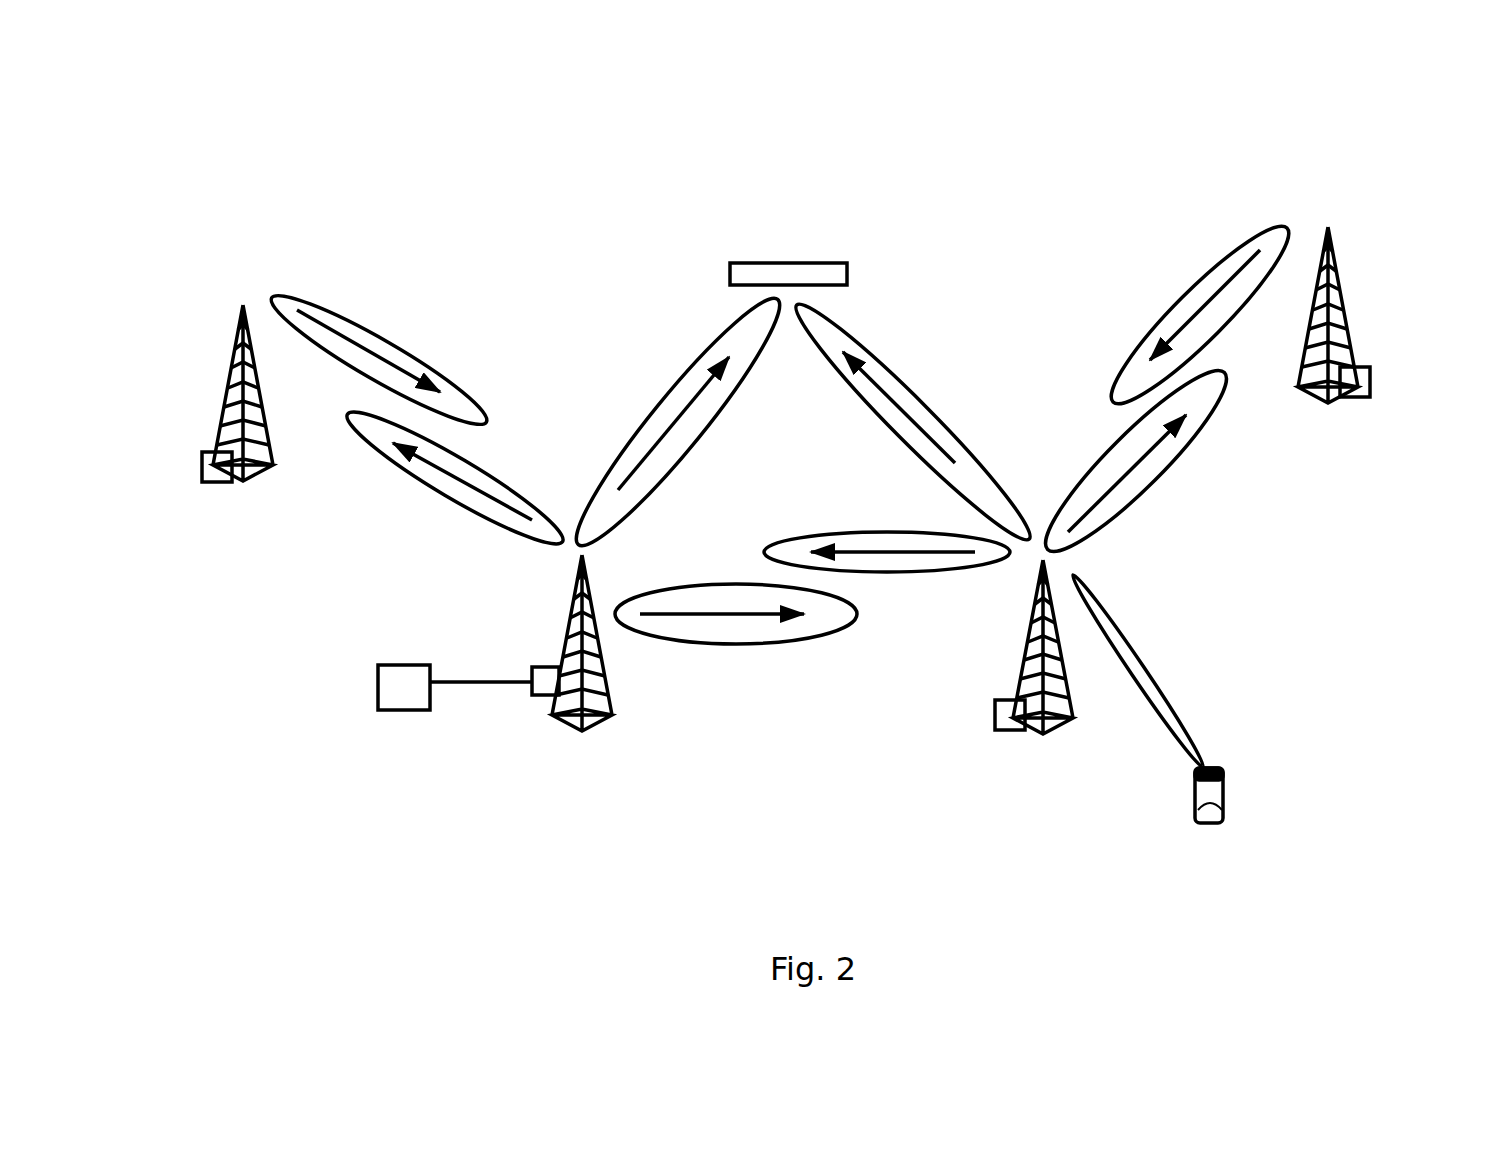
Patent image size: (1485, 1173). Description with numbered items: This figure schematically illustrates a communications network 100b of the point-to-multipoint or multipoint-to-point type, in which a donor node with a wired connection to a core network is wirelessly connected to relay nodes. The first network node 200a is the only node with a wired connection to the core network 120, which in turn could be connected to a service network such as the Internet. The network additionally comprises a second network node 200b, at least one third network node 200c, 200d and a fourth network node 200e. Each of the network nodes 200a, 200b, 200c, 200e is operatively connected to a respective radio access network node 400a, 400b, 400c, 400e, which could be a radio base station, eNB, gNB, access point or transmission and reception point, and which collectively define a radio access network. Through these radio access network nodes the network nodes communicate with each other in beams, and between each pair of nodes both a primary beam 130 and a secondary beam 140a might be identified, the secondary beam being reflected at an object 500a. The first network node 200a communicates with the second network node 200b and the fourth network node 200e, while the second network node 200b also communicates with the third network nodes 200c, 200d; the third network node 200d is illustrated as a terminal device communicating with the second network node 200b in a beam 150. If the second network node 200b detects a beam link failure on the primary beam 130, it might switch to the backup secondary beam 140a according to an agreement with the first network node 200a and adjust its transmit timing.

The communications network 100b is at (440, 124).
The core network 120 is at (402, 700).
The primary beam 130 is at (483, 405).
The secondary beam 140a is at (840, 323).
The beam 150 is at (1152, 706).
The first network node 200a is at (535, 668).
The second network node 200b is at (997, 722).
The third network node 200c is at (1370, 397).
The third network node 200d is at (1222, 815).
The fourth network node 200e is at (205, 480).
The radio access network node 400a is at (580, 557).
The radio access network node 400b is at (1038, 575).
The radio access network node 400c is at (1333, 246).
The radio access network node 400e is at (232, 325).
The object 500a is at (788, 270).